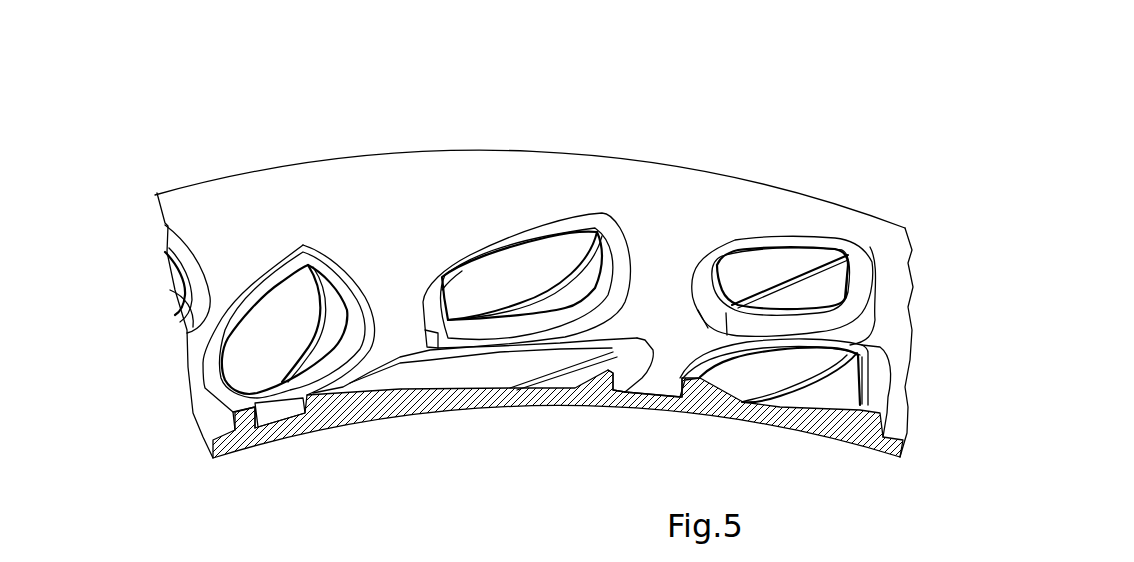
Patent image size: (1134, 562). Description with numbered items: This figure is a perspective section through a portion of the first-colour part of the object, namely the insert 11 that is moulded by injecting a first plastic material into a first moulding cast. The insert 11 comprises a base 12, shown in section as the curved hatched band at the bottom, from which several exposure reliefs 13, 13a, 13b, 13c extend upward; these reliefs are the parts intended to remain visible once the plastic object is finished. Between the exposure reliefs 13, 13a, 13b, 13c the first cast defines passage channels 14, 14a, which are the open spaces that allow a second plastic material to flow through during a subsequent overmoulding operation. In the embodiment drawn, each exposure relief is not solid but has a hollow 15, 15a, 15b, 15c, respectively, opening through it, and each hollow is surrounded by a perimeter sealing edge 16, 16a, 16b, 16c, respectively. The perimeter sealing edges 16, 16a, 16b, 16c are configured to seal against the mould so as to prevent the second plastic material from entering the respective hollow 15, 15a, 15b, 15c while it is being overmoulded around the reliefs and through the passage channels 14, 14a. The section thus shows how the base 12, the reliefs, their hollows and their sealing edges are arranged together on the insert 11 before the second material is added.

The insert 11 is at (749, 176).
The base 12 is at (287, 433).
The exposure relief 13 is at (405, 347).
The exposure relief 13a is at (889, 402).
The exposure relief 13b is at (537, 222).
The exposure relief 13c is at (825, 232).
The passage channel 14 is at (660, 378).
The passage channel 14a is at (667, 273).
The hollow 15 is at (457, 375).
The hollow 15a is at (762, 377).
The hollow 15b is at (548, 257).
The hollow 15c is at (777, 262).
The perimeter sealing edge 16 is at (631, 345).
The perimeter sealing edge 16a is at (872, 370).
The perimeter sealing edge 16b is at (437, 280).
The perimeter sealing edge 16c is at (857, 263).